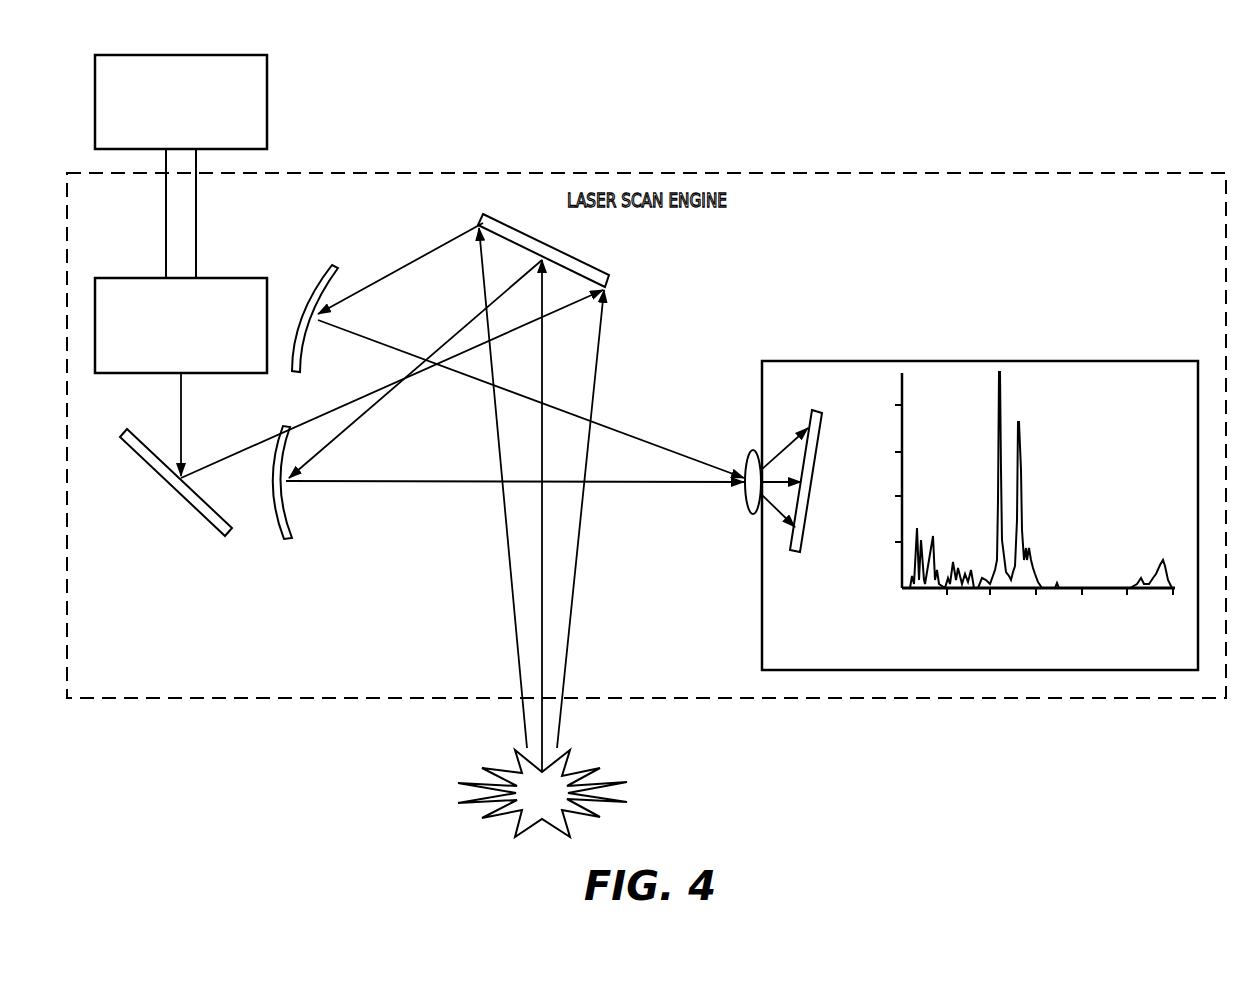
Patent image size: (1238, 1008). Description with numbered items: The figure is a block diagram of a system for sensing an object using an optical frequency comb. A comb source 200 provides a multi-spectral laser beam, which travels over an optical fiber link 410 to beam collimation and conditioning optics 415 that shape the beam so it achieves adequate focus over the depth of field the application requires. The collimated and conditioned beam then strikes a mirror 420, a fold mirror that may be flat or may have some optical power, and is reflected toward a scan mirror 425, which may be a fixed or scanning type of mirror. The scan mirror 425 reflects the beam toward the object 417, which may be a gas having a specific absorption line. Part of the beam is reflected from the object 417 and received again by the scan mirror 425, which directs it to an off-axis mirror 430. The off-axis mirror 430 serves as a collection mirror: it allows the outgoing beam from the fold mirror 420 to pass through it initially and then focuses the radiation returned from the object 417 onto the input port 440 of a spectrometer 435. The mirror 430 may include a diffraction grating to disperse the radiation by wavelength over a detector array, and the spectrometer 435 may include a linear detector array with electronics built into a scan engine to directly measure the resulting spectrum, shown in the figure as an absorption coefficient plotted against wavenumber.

The comb source 200 is at (178, 54).
The optical fiber link 410 is at (197, 226).
The beam collimation and conditioning optics 415 is at (147, 278).
The mirror 420 is at (170, 490).
The scan mirror 425 is at (552, 246).
The off-axis mirror 430 is at (280, 513).
The spectrometer 435 is at (980, 361).
The input port 440 is at (752, 452).
The object 417 is at (478, 779).